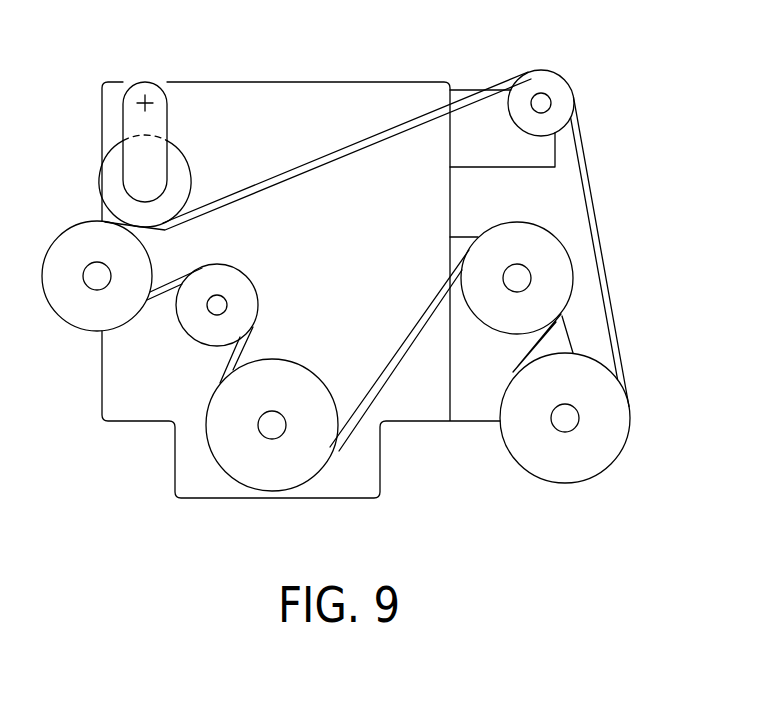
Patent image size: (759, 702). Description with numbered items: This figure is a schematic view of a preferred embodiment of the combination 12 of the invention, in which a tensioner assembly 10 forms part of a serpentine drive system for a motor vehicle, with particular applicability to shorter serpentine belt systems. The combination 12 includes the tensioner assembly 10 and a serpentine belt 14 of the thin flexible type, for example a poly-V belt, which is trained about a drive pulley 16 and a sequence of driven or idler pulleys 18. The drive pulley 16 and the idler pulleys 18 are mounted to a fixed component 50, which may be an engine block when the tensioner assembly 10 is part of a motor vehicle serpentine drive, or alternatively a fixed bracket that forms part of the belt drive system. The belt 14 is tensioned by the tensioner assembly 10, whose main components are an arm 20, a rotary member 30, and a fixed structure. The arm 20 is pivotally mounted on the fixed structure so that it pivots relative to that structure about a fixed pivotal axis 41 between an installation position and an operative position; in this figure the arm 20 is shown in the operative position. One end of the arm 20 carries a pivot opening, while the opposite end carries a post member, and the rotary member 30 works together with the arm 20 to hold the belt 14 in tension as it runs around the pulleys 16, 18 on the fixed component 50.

The tensioner assembly 10 is at (172, 126).
The combination 12 is at (253, 173).
The belt 14 is at (597, 230).
The drive pulley 16 is at (287, 480).
The driven or idler pulley 18 is at (557, 83).
The arm 20 is at (137, 77).
The rotary member 30 is at (88, 193).
The fixed pivotal axis 41 is at (146, 98).
The fixed component 50 is at (321, 97).